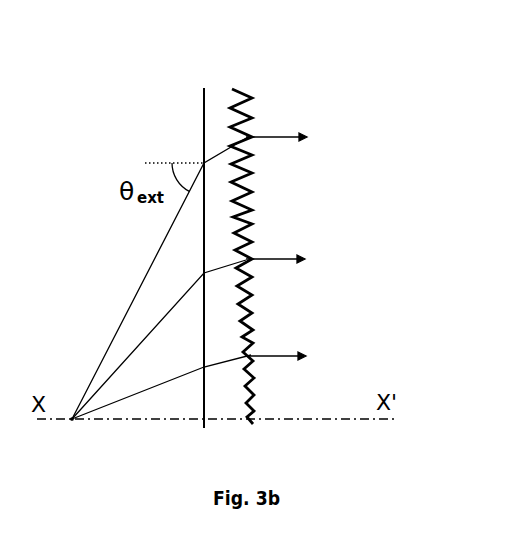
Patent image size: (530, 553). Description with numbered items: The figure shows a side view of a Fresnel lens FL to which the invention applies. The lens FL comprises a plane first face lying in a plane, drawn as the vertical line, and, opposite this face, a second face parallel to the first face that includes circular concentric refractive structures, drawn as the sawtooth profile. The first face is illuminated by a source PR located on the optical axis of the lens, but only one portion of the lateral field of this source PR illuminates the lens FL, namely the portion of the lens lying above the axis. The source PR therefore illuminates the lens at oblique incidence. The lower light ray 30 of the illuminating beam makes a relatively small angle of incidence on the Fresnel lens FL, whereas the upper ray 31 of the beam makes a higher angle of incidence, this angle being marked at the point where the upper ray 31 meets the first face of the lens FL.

The lower light ray 30 is at (277, 357).
The upper ray 31 is at (297, 136).
The Fresnel lens FL is at (203, 158).
The source PR is at (70, 435).